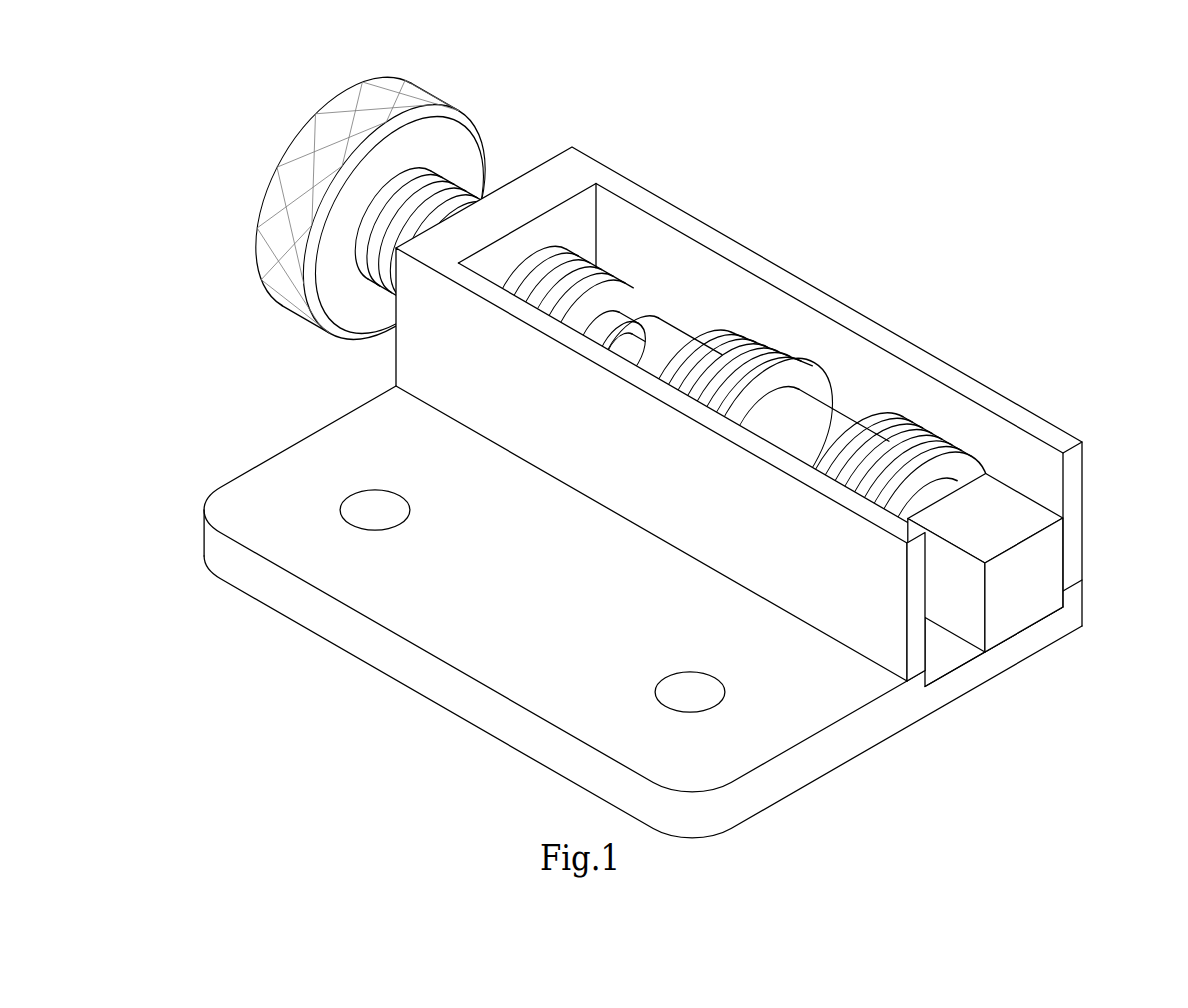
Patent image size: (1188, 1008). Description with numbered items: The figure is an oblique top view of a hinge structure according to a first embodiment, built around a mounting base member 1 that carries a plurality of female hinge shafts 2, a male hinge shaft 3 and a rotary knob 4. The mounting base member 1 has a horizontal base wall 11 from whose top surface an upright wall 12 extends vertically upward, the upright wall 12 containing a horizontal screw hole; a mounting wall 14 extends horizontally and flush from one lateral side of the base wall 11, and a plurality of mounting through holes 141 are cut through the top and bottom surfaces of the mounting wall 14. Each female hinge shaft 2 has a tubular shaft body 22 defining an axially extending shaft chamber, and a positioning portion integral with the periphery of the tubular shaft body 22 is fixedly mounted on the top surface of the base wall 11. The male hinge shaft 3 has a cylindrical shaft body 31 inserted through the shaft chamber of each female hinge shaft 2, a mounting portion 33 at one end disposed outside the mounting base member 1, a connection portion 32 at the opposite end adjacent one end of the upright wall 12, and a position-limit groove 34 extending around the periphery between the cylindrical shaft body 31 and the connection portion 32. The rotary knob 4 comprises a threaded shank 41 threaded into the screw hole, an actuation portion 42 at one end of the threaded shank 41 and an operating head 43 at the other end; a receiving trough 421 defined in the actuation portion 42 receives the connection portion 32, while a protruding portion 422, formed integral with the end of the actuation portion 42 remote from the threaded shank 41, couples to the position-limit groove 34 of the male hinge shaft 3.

The mounting base member 1 is at (645, 450).
The horizontal base wall 11 is at (945, 643).
The upright wall 12 is at (741, 404).
The mounting wall 14 is at (643, 612).
The mounting through hole 141 is at (397, 527).
The female hinge shaft 2 is at (893, 349).
The tubular shaft body 22 is at (787, 352).
The male hinge shaft 3 is at (879, 427).
The cylindrical shaft body 31 is at (823, 417).
The connection portion 32 is at (597, 287).
The mounting portion 33 is at (1057, 553).
The position-limit groove 34 is at (630, 297).
The rotary knob 4 is at (499, 228).
The threaded shank 41 is at (453, 187).
The actuation portion 42 is at (619, 279).
The receiving trough 421 is at (582, 279).
The protruding portion 422 is at (613, 285).
The operating head 43 is at (268, 230).